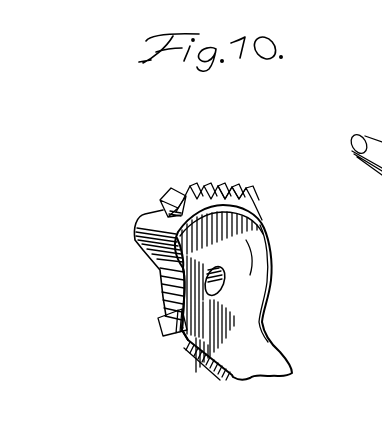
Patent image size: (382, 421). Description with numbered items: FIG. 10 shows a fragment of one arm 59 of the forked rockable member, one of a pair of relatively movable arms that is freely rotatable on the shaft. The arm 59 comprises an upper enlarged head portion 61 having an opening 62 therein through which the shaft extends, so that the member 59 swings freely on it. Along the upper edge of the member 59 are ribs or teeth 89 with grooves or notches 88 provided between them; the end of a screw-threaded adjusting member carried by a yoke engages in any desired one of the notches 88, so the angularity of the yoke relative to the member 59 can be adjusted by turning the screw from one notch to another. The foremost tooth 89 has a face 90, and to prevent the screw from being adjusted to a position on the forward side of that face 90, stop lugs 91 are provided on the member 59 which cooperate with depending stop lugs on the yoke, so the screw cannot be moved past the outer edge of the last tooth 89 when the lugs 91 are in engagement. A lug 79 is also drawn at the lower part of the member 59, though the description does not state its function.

The arm 59 is at (262, 325).
The upper enlarged head portion 61 is at (246, 268).
The opening 62 is at (226, 270).
The lug 79 is at (190, 342).
The grooves or notches 88 is at (204, 189).
The ribs or teeth 89 is at (238, 190).
The face of foremost tooth 90 is at (163, 192).
The stop lugs 91 is at (163, 254).